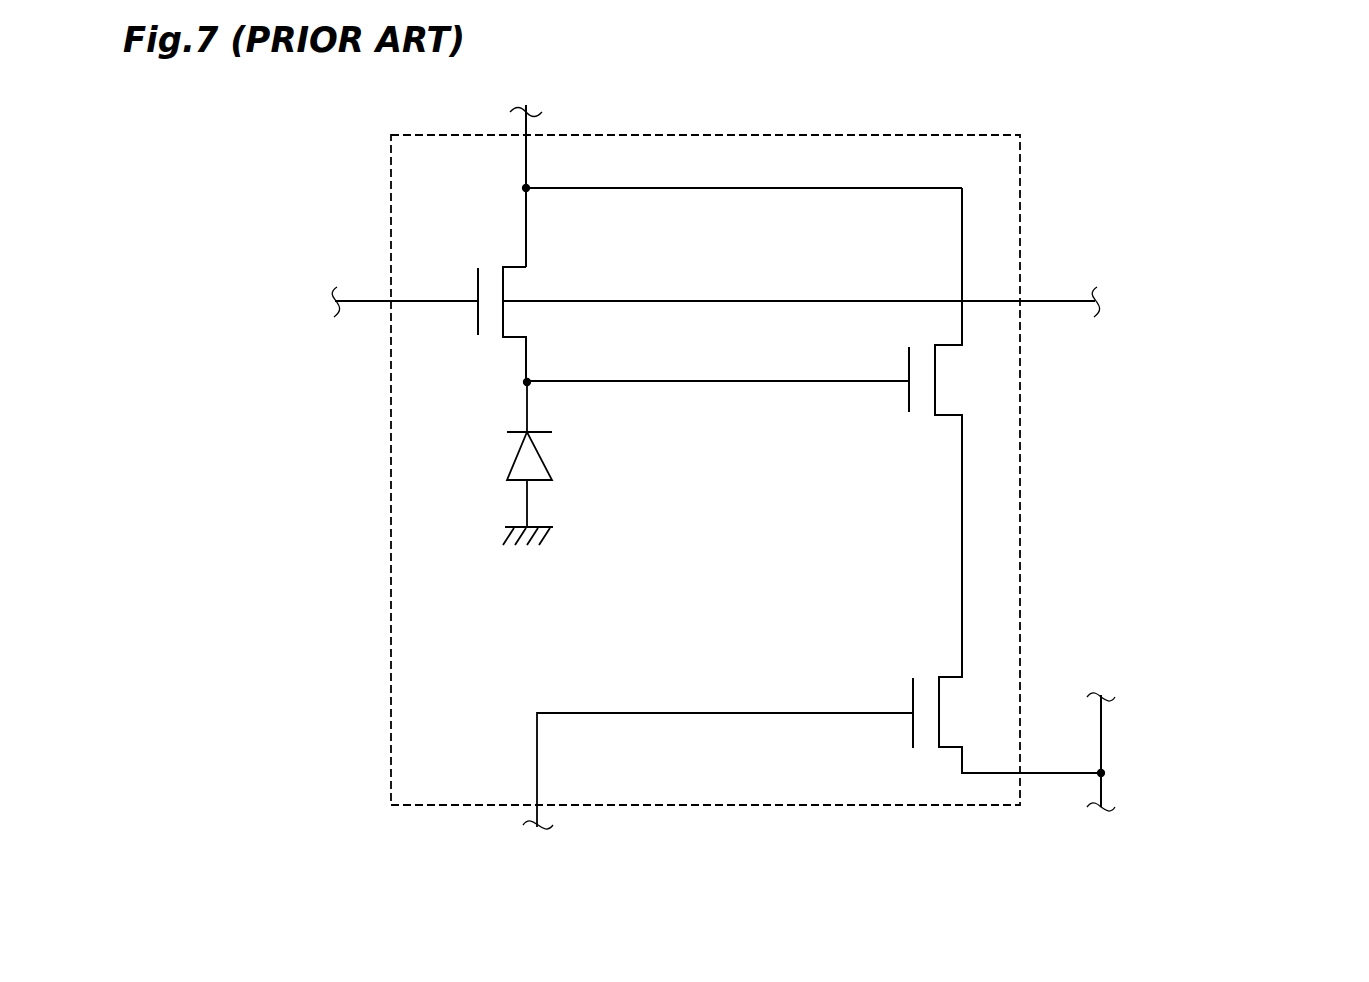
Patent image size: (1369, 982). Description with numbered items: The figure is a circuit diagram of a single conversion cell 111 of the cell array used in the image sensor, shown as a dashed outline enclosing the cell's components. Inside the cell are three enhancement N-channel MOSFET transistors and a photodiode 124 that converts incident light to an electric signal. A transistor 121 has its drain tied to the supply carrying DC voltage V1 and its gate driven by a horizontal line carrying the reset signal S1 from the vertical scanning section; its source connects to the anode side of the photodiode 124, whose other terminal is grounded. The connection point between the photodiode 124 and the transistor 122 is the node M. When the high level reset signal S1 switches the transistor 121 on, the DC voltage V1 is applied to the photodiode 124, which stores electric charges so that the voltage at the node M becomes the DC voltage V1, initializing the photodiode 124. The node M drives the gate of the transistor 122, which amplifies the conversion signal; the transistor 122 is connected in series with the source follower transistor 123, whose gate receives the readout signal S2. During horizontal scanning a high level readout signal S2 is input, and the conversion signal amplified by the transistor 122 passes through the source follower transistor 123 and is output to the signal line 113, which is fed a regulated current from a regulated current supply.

The conversion cell 111 is at (1019, 238).
The signal line 113 is at (1101, 729).
The transistor 121 is at (487, 277).
The transistor 122 is at (923, 408).
The source follower transistor 123 is at (928, 740).
The photodiode 124 is at (545, 462).
The node M is at (529, 380).
The reset signal S1 is at (362, 302).
The readout signal S2 is at (537, 812).
The DC voltage V1 is at (526, 122).